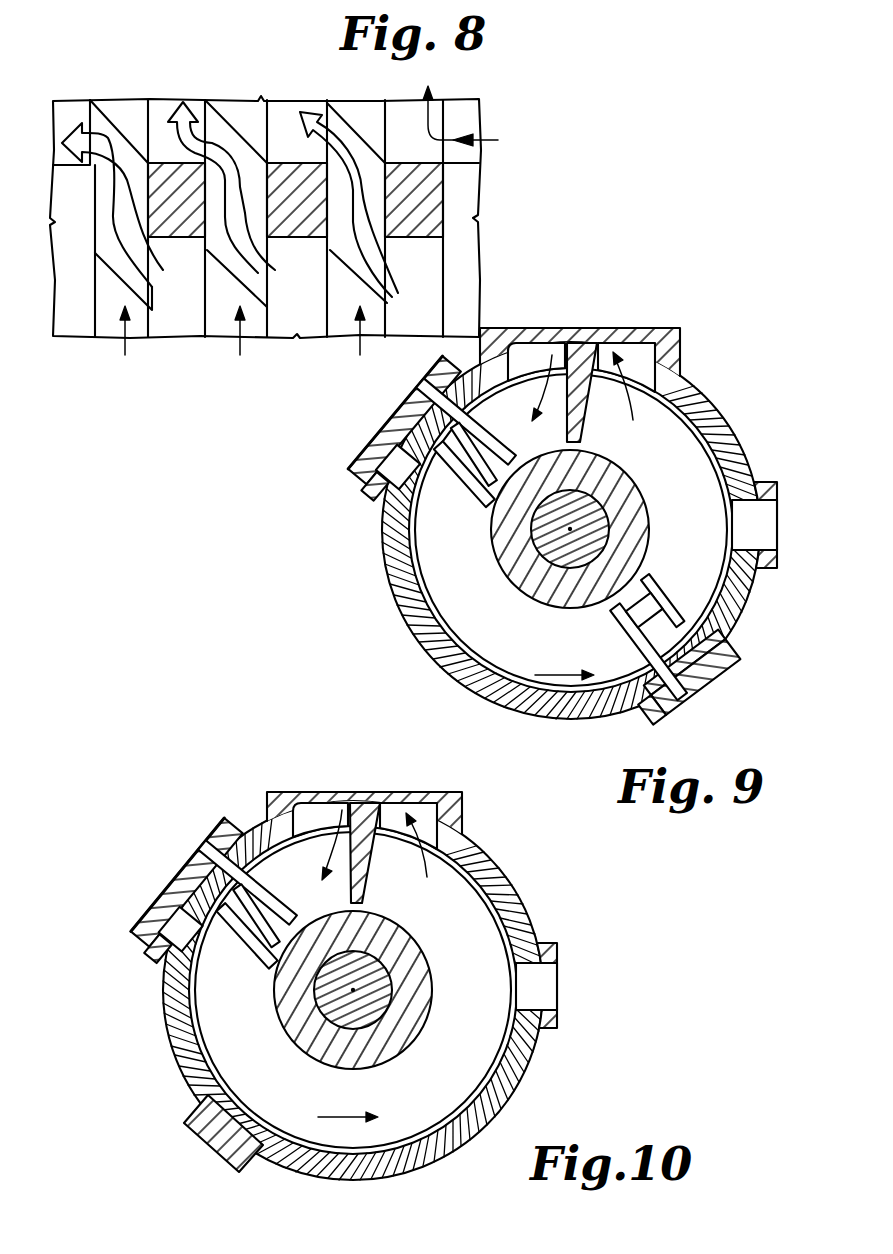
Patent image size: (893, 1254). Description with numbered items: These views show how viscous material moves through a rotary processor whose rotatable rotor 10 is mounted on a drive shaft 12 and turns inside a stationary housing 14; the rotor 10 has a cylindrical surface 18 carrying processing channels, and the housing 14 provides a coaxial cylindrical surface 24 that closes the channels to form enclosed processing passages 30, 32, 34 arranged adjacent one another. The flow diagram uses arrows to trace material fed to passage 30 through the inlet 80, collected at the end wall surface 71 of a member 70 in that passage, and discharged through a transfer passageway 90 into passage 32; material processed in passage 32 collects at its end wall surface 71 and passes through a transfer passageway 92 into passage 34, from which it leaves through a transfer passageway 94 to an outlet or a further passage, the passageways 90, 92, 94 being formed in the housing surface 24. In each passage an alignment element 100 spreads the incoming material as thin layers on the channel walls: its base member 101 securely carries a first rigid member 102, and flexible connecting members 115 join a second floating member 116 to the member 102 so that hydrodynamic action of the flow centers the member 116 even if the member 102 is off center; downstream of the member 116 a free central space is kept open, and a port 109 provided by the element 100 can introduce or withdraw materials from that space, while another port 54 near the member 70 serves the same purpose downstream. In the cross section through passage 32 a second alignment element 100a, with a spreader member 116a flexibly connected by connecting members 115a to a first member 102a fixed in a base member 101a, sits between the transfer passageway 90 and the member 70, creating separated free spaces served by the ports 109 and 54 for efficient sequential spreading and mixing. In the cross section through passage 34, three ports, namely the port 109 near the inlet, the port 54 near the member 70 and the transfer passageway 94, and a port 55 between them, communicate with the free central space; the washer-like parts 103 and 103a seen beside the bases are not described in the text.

In FIG. 9, the rotor 10 is at (620, 556).
In FIG. 10, the rotor 10 is at (400, 1035).
In FIG. 9, the drive shaft 12 is at (606, 527).
In FIG. 10, the drive shaft 12 is at (392, 999).
In FIG. 9, the housing 14 is at (405, 597).
In FIG. 10, the housing 14 is at (197, 1047).
In FIG. 9, the surface of rotor 18 is at (675, 385).
In FIG. 10, the surface of rotor 18 is at (482, 848).
In FIG. 9, the cylindrical surface of housing 24 is at (667, 410).
In FIG. 10, the cylindrical surface of housing 24 is at (480, 882).
In FIG. 8, the processing passage 30 is at (398, 113).
In FIG. 8, the processing passage 32 is at (287, 115).
In FIG. 9, the processing passage 32 is at (693, 505).
In FIG. 8, the processing passage 34 is at (158, 110).
In FIG. 10, the processing passage 34 is at (478, 985).
In FIG. 9, the port 54 is at (779, 517).
In FIG. 10, the port 54 is at (559, 985).
In FIG. 10, the port 55 is at (213, 1125).
In FIG. 8, the member 70 is at (410, 162).
In FIG. 9, the member 70 is at (585, 343).
In FIG. 10, the member 70 is at (368, 793).
In FIG. 8, the end wall surface 71 is at (415, 235).
In FIG. 9, the end wall surface 71 is at (585, 427).
In FIG. 10, the end wall surface 71 is at (368, 877).
In FIG. 8, the inlet 80 is at (477, 121).
In FIG. 8, the transfer passageway 90 is at (349, 233).
In FIG. 9, the transfer passageway 90 is at (548, 353).
In FIG. 8, the transfer passageway 92 is at (221, 228).
In FIG. 9, the transfer passageway 92 is at (630, 353).
In FIG. 10, the transfer passageway 92 is at (300, 813).
In FIG. 8, the transfer passageway 94 is at (112, 239).
In FIG. 10, the transfer passageway 94 is at (402, 813).
In FIG. 9, the alignment element 100 is at (408, 398).
In FIG. 10, the alignment element 100 is at (200, 857).
In FIG. 9, the alignment element 100a is at (667, 697).
In FIG. 9, the base member 101 is at (355, 468).
In FIG. 10, the base member 101 is at (135, 935).
In FIG. 9, the base member 101a is at (647, 695).
In FIG. 9, the first rigid member 102 is at (484, 436).
In FIG. 10, the first rigid member 102 is at (272, 893).
In FIG. 9, the first member 102a is at (612, 608).
In FIG. 9, the washer 103 is at (363, 492).
In FIG. 10, the washer 103 is at (140, 957).
In FIG. 9, the second washer 103a is at (682, 657).
In FIG. 9, the port 109 is at (373, 435).
In FIG. 10, the port 109 is at (158, 898).
In FIG. 9, the flexible connecting members 115 is at (462, 463).
In FIG. 10, the flexible connecting members 115 is at (257, 930).
In FIG. 9, the flexible connecting members 115a is at (643, 622).
In FIG. 9, the second floating member 116 is at (487, 487).
In FIG. 10, the second floating member 116 is at (267, 970).
In FIG. 9, the spreader member 116a is at (657, 585).